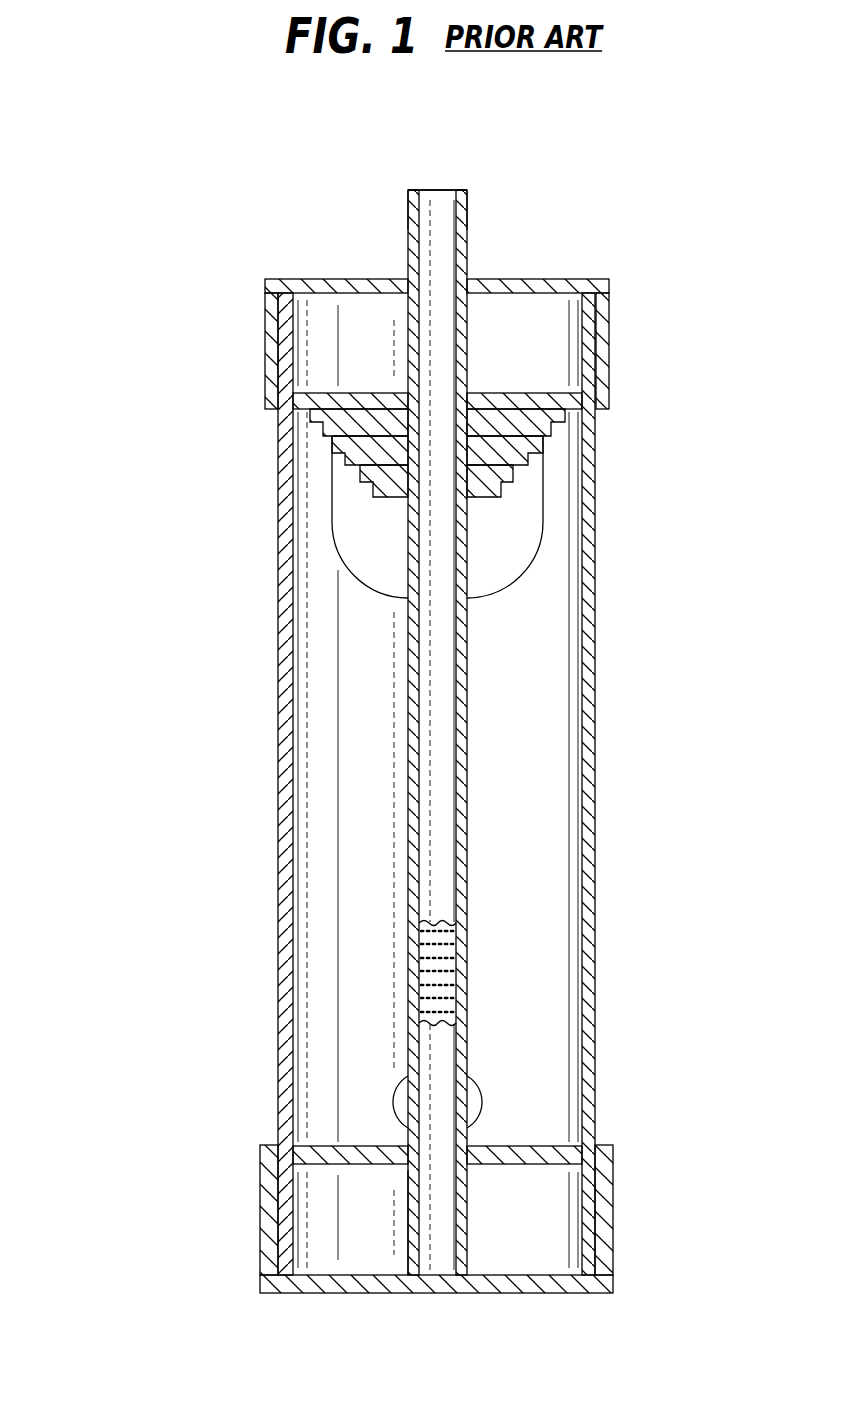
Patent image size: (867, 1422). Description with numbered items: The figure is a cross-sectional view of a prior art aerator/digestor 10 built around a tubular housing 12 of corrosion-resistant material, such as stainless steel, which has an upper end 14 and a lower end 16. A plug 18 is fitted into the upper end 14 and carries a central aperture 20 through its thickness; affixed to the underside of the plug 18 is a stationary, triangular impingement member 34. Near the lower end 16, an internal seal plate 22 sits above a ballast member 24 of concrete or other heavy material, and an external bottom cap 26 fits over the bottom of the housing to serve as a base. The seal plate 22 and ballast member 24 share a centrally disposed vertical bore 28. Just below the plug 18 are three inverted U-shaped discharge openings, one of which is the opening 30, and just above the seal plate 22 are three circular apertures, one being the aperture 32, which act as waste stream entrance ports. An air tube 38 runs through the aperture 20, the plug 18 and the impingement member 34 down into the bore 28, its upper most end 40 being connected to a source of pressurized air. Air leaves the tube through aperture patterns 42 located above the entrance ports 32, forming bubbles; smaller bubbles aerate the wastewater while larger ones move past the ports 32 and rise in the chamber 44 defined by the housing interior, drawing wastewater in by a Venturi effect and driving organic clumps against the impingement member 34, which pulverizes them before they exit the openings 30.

The aerator/digestor 10 is at (196, 326).
The tubular housing 12 is at (596, 985).
The upper end 14 is at (609, 312).
The lower end 16 is at (597, 1280).
The plug 18 is at (530, 315).
The aperture 20 is at (407, 337).
The internal seal plate 22 is at (330, 1144).
The ballast member 24 is at (312, 1197).
The external bottom cap 26 is at (614, 1212).
The vertical bore 28 is at (408, 1210).
The inverted U-shaped opening 30 is at (342, 540).
The circular aperture 32 is at (483, 1099).
The impingement member 34 is at (502, 490).
The air tube 38 is at (467, 650).
The upper most end 40 is at (433, 190).
The apertures 42 is at (467, 931).
The chamber 44 is at (322, 870).